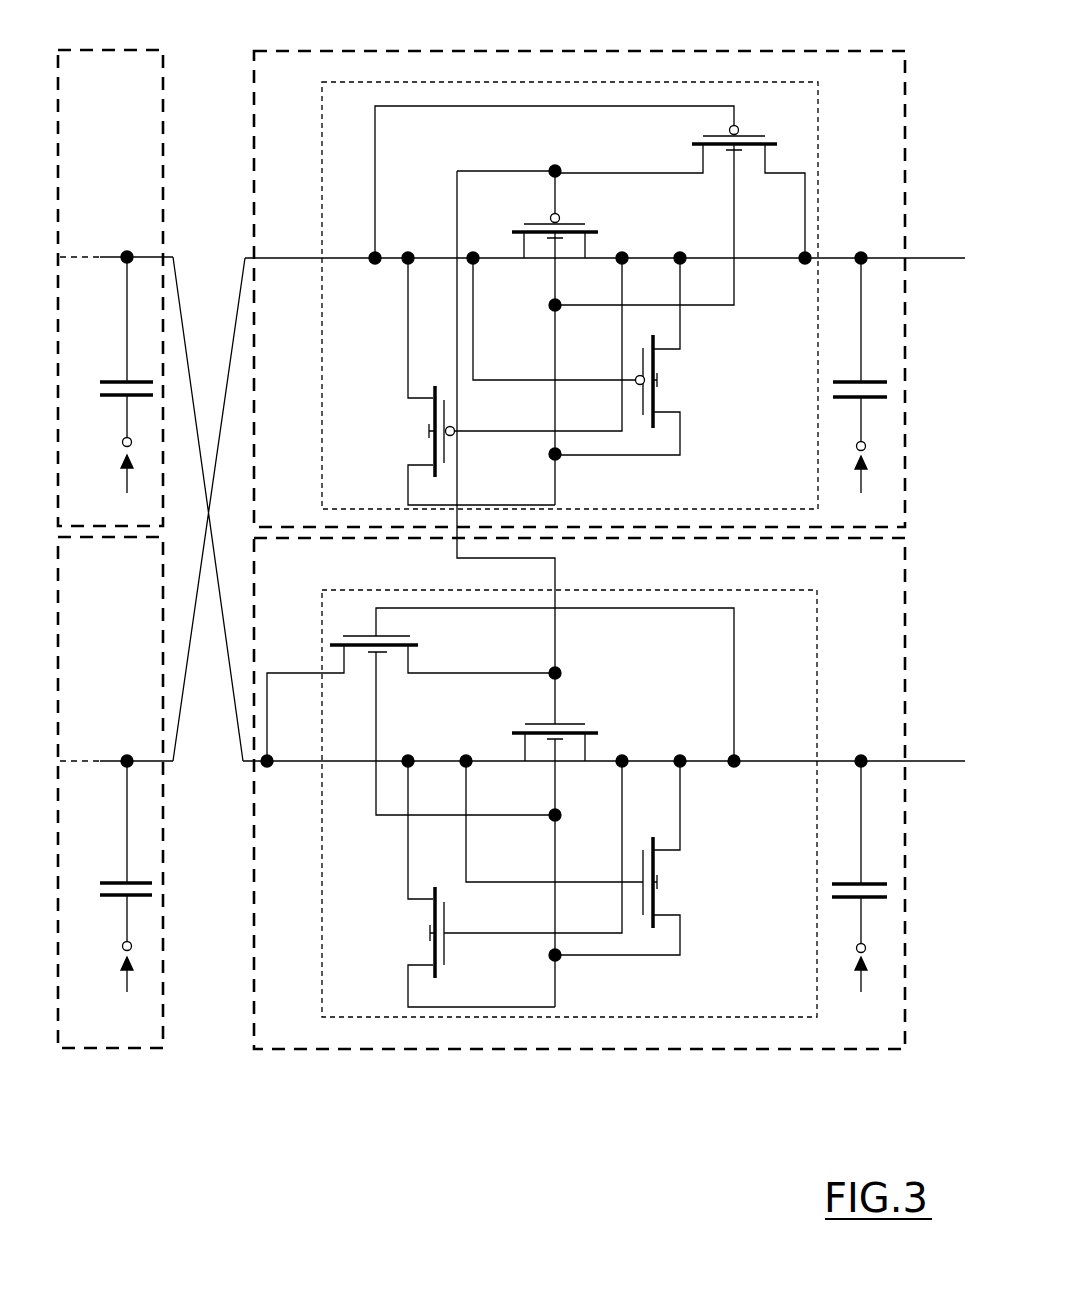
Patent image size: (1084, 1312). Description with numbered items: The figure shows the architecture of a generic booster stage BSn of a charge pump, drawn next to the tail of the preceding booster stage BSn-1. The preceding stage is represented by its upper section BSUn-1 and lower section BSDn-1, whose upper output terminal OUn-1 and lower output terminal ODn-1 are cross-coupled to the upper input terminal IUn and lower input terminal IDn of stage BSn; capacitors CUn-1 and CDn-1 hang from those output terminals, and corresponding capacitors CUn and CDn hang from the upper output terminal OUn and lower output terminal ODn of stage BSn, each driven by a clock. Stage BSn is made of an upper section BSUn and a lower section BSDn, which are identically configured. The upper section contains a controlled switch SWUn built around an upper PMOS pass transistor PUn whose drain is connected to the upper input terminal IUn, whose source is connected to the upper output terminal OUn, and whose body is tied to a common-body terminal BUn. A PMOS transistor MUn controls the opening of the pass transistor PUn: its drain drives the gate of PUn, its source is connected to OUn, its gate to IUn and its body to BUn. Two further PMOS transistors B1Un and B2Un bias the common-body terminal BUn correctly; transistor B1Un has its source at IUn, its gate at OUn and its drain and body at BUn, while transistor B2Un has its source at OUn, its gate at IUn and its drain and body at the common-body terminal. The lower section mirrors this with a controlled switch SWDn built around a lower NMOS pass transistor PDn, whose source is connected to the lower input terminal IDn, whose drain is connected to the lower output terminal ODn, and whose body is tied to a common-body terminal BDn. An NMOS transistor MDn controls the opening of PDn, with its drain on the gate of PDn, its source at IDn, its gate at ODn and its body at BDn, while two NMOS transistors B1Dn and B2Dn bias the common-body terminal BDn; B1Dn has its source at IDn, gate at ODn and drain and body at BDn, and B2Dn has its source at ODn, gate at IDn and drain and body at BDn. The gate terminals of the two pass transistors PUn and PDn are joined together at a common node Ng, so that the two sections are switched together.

The upper section of the preceding booster stage BSUn-1 is at (115, 61).
The lower section of the preceding booster stage BSDn-1 is at (115, 1051).
The upper section BSUn is at (821, 58).
The lower section BSDn is at (830, 1044).
The controlled switch SWUn is at (815, 102).
The controlled switch SWDn is at (815, 610).
The upper output terminal of the preceding stage OUn-1 is at (127, 253).
The lower output terminal of the preceding stage ODn-1 is at (127, 757).
The upper boost capacitor of stage n-1 CUn-1 is at (97, 389).
The lower boost capacitor of stage n-1 CDn-1 is at (97, 891).
The upper input terminal IUn is at (303, 256).
The lower input terminal IDn is at (282, 764).
The PMOS transistor MUn is at (678, 150).
The NMOS transistor MDn is at (418, 660).
The upper PMOS pass transistor PUn is at (514, 219).
The lower NMOS pass transistor PDn is at (514, 728).
The PMOS transistor B1Un is at (395, 430).
The PMOS transistor B2Un is at (680, 363).
The NMOS transistor B1Dn is at (395, 933).
The NMOS transistor B2Dn is at (680, 866).
The common-body terminal BUn is at (560, 458).
The common-body terminal BDn is at (560, 960).
The upper output terminal OUn is at (863, 253).
The lower output terminal ODn is at (863, 756).
The upper boost capacitor CUn is at (830, 389).
The lower boost capacitor CDn is at (828, 893).
The node Ng is at (560, 595).
The preceding booster stage BSn-1 is at (163, 1125).
The booster stage BSn is at (603, 1124).